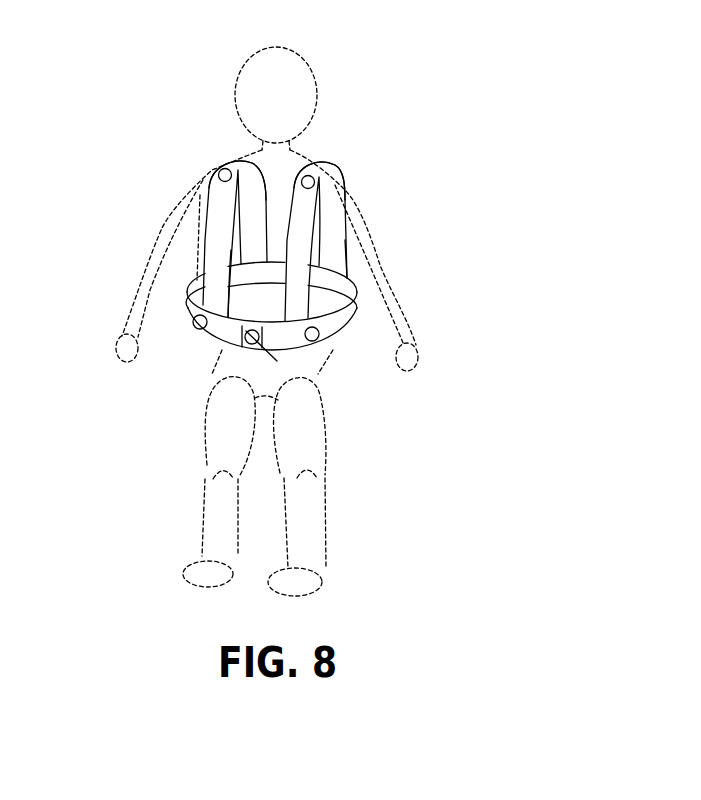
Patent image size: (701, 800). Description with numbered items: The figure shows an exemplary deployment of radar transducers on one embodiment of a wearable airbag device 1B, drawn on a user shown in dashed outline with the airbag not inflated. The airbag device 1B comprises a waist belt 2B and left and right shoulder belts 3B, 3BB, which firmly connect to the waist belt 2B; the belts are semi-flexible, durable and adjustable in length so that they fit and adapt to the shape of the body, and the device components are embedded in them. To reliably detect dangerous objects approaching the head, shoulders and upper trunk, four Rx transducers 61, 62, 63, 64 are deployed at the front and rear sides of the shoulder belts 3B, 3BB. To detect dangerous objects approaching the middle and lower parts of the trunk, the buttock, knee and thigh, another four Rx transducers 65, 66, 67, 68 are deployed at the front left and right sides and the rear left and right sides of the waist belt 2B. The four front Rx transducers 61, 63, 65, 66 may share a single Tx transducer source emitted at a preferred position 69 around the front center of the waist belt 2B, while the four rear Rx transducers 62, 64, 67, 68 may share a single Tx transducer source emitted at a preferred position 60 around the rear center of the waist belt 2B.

The airbag device 1B is at (433, 78).
The waist belt 2B is at (212, 337).
The shoulder belt 3B is at (203, 262).
The shoulder belt 3BB is at (305, 242).
The Tx transducer source position 60 is at (276, 271).
The Rx transducer 61 is at (219, 170).
The Rx transducer 62 is at (232, 160).
The Rx transducer 63 is at (314, 170).
The Rx transducer 64 is at (310, 180).
The Rx transducer 65 is at (316, 335).
The Rx transducer 66 is at (193, 326).
The Rx transducer 67 is at (398, 300).
The Rx transducer 68 is at (237, 275).
The Tx transducer source position 69 is at (312, 350).